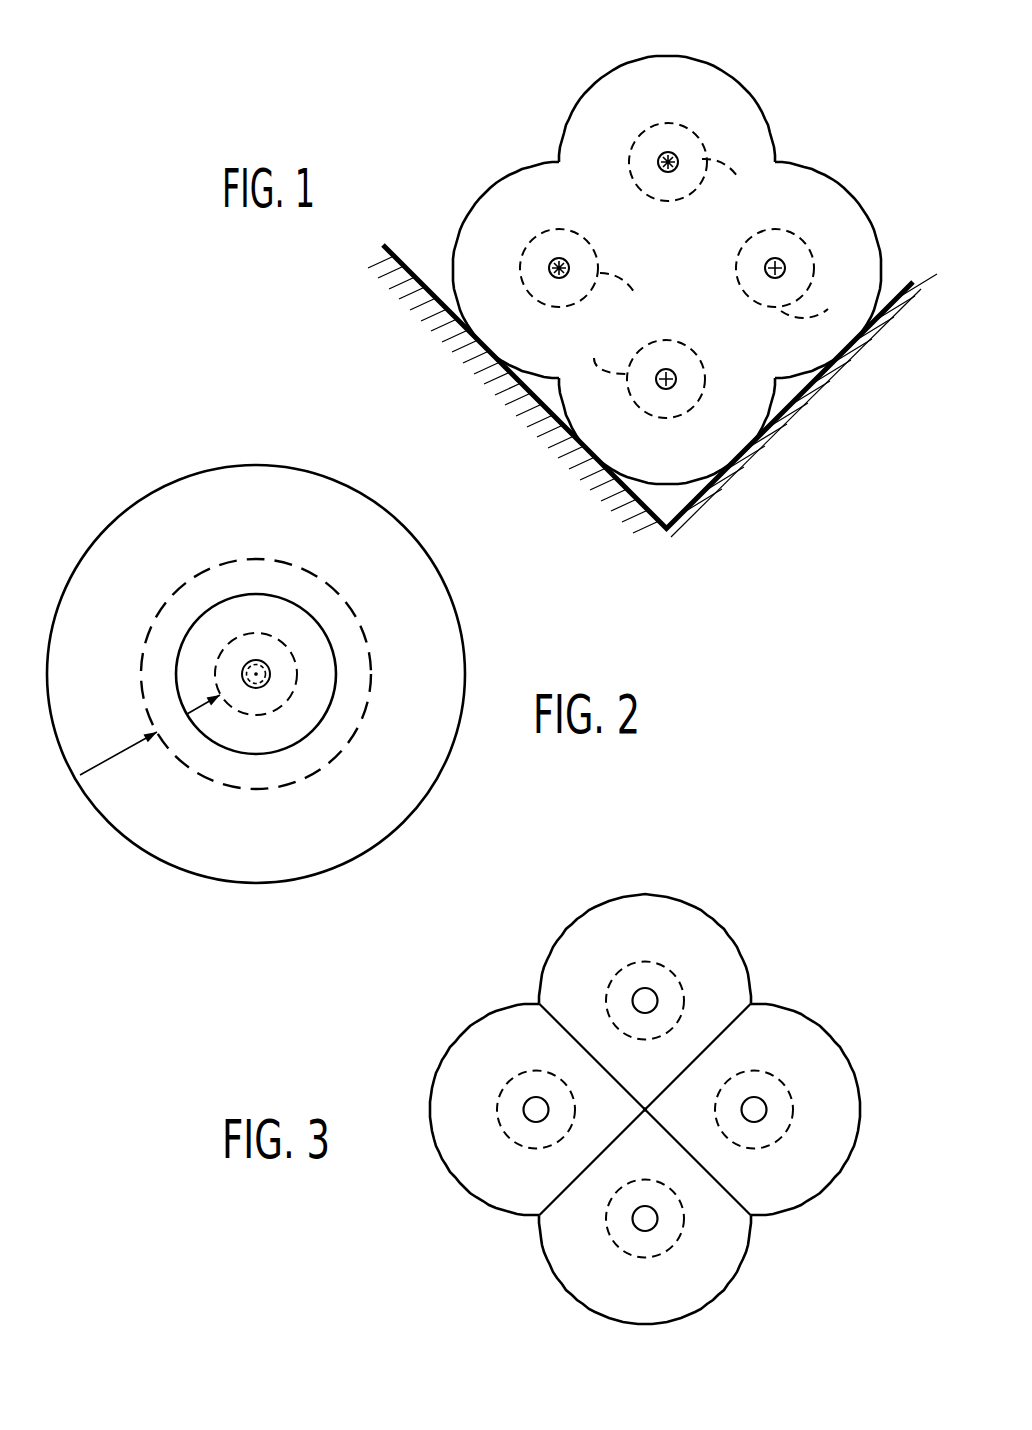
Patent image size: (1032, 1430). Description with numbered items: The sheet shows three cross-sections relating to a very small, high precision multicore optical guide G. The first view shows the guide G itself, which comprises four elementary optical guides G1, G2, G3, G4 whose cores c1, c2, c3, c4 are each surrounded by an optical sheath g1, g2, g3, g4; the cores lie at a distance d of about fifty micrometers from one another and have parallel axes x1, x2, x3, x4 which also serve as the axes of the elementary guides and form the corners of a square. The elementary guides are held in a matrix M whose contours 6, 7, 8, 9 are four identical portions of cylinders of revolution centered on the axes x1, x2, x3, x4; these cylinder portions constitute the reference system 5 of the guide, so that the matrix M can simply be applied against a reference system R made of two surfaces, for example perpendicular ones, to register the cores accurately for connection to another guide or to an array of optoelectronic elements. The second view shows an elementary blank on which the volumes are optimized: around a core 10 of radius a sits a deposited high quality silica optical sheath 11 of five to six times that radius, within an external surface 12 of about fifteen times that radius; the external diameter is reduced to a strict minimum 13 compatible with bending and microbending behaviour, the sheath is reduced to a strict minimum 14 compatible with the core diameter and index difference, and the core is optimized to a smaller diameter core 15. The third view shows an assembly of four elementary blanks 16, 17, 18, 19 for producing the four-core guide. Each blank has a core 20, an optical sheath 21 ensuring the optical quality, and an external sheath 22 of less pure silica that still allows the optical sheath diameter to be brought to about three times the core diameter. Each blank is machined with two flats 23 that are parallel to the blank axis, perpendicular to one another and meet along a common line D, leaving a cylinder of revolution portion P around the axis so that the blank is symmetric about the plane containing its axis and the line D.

In FIG. 1, the multicore optical guide G is at (528, 87).
In FIG. 1, the reference system of the multicore guide 5 is at (667, 302).
In FIG. 1, the contour of the matrix 6 is at (490, 183).
In FIG. 1, the contour of the matrix 7 is at (727, 67).
In FIG. 1, the contour of the matrix 8 is at (807, 165).
In FIG. 1, the contour of the matrix 9 is at (655, 484).
In FIG. 1, the core c1 is at (569, 266).
In FIG. 1, the core c2 is at (664, 152).
In FIG. 1, the core c3 is at (785, 267).
In FIG. 1, the core c4 is at (676, 378).
In FIG. 1, the axis of the core x1 is at (549, 268).
In FIG. 1, the axis of the core x2 is at (659, 167).
In FIG. 1, the axis of the core x3 is at (765, 268).
In FIG. 1, the axis of the core x4 is at (656, 386).
In FIG. 1, the elementary optical guide G1 is at (523, 298).
In FIG. 1, the elementary optical guide G2 is at (703, 127).
In FIG. 1, the elementary optical guide G3 is at (735, 305).
In FIG. 1, the elementary optical guide G4 is at (680, 428).
In FIG. 1, the optical sheath g1 is at (622, 296).
In FIG. 1, the optical sheath g2 is at (727, 186).
In FIG. 1, the optical sheath g3 is at (816, 308).
In FIG. 1, the optical sheath g4 is at (603, 361).
In FIG. 1, the distance between the cores d is at (548, 255).
In FIG. 1, the reference system R is at (420, 283).
In FIG. 1, the matrix M is at (616, 453).
In FIG. 2, the core 10 is at (272, 670).
In FIG. 2, the optical sheath 11 is at (187, 634).
In FIG. 2, the external surface 12 is at (178, 877).
In FIG. 2, the strict minimum of the external diameter 13 is at (187, 773).
In FIG. 2, the strict minimum of the sheath diameter 14 is at (235, 634).
In FIG. 2, the smaller diameter core 15 is at (272, 686).
In FIG. 3, the elementary blank 16 is at (458, 1190).
In FIG. 3, the elementary blank 17 is at (715, 913).
In FIG. 3, the elementary blank 18 is at (800, 1008).
In FIG. 3, the elementary blank 19 is at (632, 1327).
In FIG. 3, the core 20 is at (633, 998).
In FIG. 3, the optical sheath 21 is at (673, 987).
In FIG. 3, the external sheath 22 is at (618, 1102).
In FIG. 3, the flats 23 is at (680, 1078).
In FIG. 3, the cylinder of revolution portion P is at (580, 915).
In FIG. 3, the common line D is at (645, 1110).